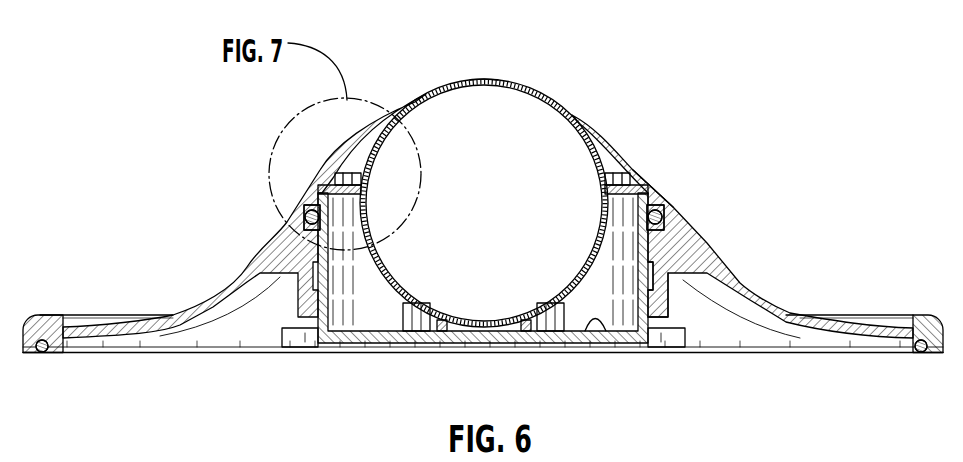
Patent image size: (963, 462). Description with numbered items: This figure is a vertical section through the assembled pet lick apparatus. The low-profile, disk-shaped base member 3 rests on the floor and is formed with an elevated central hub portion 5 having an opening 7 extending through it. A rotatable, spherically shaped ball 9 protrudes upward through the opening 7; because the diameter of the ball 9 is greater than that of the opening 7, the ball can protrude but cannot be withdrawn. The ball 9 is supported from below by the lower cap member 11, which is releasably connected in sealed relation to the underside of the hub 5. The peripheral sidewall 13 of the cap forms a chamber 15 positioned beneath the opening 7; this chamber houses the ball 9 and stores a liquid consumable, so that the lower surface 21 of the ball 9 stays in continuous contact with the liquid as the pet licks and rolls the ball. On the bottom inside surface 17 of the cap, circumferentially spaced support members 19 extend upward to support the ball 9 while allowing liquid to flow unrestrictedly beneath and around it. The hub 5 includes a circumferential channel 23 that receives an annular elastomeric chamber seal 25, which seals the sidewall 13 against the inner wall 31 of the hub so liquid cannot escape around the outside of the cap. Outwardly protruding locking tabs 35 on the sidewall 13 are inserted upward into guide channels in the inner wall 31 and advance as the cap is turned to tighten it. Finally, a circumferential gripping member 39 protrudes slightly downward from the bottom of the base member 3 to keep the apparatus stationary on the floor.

The base member 3 is at (786, 315).
The central hub portion 5 is at (281, 240).
The opening 7 is at (574, 118).
The ball 9 is at (492, 70).
The lower cap member 11 is at (350, 340).
The peripheral sidewall 13 is at (650, 240).
The chamber 15 is at (624, 288).
The bottom inside surface 17 is at (605, 330).
The support members 19 is at (410, 315).
The lower surface of the ball 21 is at (396, 288).
The circumferential channel 23 is at (658, 200).
The chamber seal 25 is at (318, 203).
The inner wall 31 is at (652, 300).
The locking tab 35 is at (654, 268).
The gripping member 39 is at (42, 353).